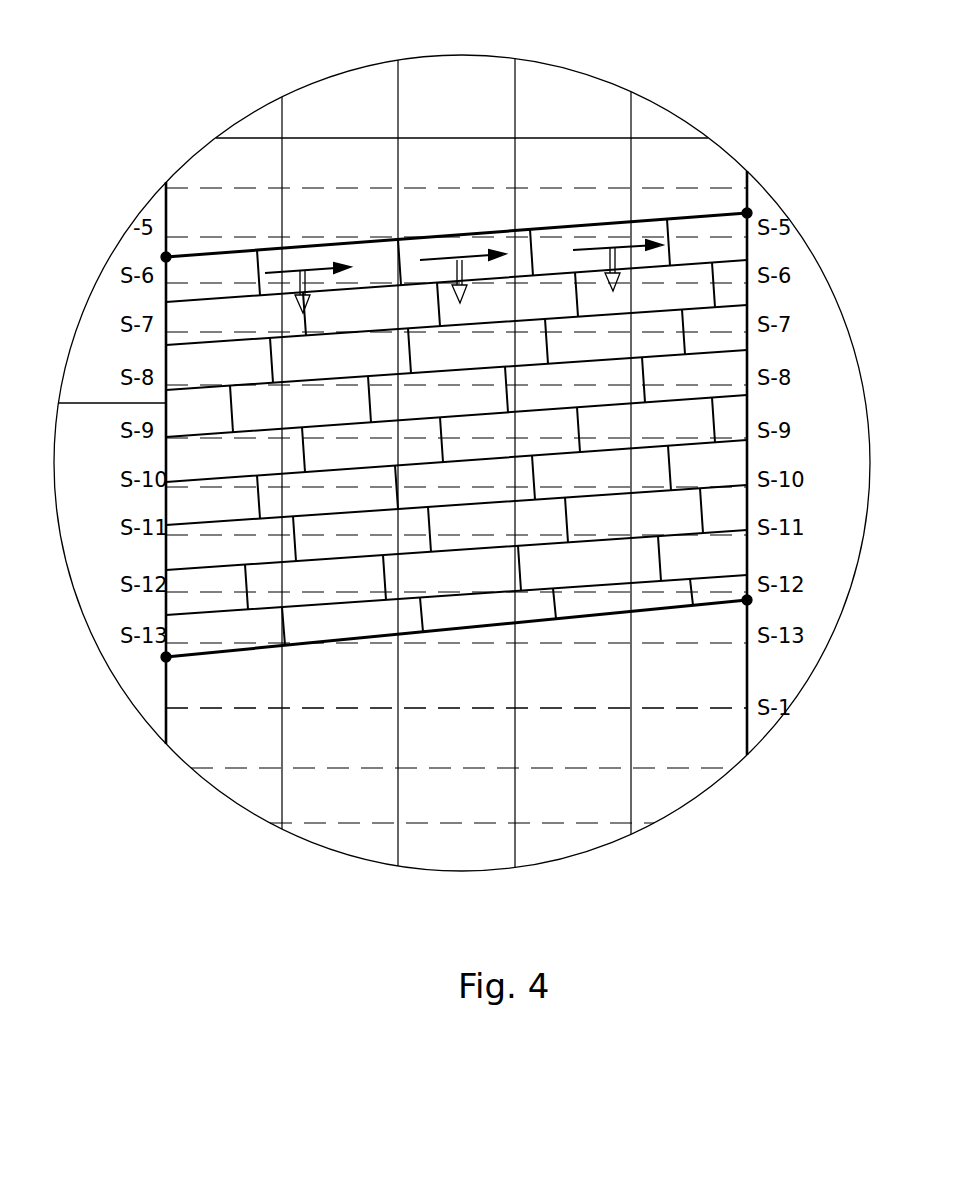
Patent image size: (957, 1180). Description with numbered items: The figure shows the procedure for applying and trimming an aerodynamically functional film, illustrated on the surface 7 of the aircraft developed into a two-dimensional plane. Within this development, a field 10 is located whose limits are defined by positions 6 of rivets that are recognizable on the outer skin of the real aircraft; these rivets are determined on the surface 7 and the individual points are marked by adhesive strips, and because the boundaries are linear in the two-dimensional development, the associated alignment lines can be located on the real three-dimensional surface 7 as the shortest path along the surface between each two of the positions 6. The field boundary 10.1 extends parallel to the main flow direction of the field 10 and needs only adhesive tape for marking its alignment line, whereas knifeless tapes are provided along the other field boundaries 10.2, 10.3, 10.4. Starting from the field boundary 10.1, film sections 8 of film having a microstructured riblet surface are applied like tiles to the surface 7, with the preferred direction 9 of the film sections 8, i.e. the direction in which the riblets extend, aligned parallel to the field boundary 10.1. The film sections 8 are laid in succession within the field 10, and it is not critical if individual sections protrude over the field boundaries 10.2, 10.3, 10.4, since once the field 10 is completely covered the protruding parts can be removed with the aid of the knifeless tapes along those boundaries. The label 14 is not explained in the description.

The positions of rivets 6 is at (747, 213).
The surface of the aircraft 7 is at (562, 98).
The film sections 8 is at (560, 258).
The preferred direction 9 is at (638, 237).
The field 10 is at (378, 365).
The field boundary 10.1 is at (476, 232).
The field boundary 10.2 is at (747, 403).
The field boundary 10.3 is at (455, 622).
The field boundary 10.4 is at (166, 453).
The ring 14 is at (444, 708).